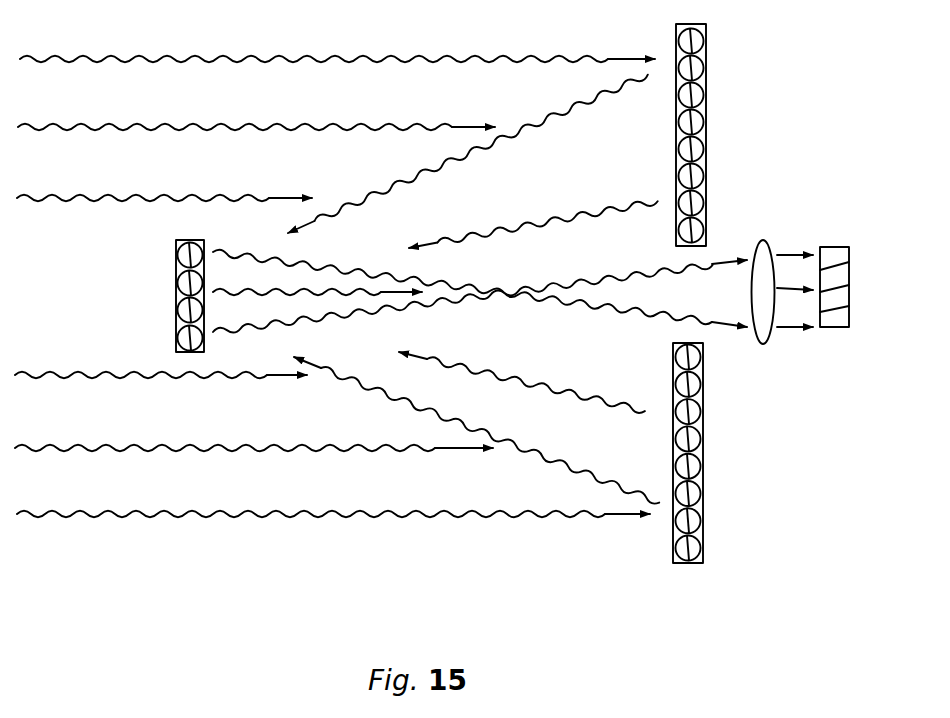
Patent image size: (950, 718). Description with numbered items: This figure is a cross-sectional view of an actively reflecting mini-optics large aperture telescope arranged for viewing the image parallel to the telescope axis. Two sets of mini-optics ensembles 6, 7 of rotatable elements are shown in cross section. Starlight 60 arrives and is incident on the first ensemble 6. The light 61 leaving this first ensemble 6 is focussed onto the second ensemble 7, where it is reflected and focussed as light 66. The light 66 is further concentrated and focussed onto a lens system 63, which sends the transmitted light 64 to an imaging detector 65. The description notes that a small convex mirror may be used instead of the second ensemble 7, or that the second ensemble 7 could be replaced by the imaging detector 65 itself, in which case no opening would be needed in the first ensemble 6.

The starlight 60 is at (110, 128).
The light from the first ensemble 61 is at (514, 142).
The first mini-optics ensemble 6 is at (662, 145).
The second mini-optics ensemble 7 is at (163, 345).
The lens system 63 is at (755, 243).
The transmitted light 64 is at (795, 245).
The imaging detector 65 is at (838, 246).
The light reflected from the second ensemble 66 is at (642, 271).